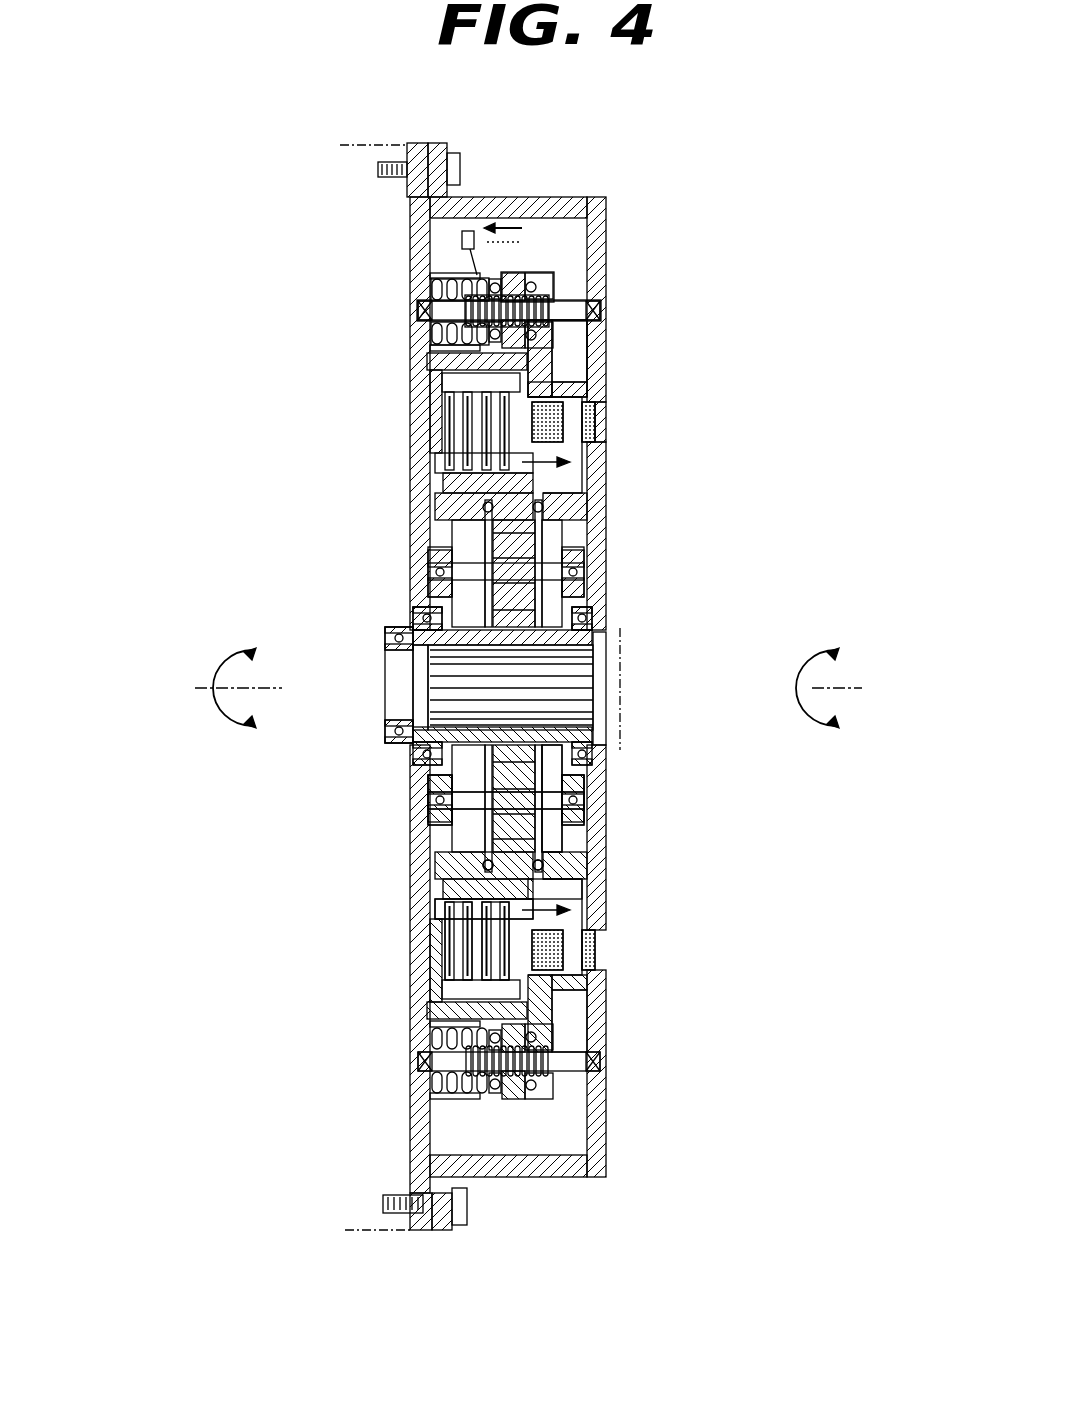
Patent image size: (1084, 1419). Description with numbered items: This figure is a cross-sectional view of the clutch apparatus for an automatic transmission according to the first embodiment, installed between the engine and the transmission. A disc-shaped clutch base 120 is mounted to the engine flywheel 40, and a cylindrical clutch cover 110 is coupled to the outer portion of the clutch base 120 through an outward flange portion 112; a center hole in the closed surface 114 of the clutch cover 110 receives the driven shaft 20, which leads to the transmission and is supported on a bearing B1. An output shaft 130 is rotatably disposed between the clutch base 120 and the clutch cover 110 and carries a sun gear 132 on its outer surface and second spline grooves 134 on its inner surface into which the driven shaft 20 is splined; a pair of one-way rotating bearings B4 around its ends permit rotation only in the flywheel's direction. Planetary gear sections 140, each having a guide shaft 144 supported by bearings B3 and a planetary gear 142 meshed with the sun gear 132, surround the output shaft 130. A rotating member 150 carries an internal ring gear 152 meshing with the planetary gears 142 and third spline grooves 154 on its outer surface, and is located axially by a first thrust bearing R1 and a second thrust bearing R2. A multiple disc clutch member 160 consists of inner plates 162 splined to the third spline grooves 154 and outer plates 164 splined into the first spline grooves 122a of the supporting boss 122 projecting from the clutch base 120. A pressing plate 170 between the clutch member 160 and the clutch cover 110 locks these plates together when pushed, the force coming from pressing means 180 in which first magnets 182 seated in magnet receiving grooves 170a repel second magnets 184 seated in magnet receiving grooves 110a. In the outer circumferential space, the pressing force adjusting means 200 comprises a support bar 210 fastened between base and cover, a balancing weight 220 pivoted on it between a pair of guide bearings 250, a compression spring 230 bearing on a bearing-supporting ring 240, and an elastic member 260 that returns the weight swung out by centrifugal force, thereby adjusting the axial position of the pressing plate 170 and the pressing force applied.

The driven shaft 20 is at (610, 676).
The flywheel 40 is at (378, 1232).
The clutch cover 110 is at (586, 645).
The magnet receiving grooves 110a is at (606, 440).
The outward flange portion 112 is at (455, 150).
The closed surface 114 is at (606, 210).
The clutch base 120 is at (558, 391).
The supporting boss 122 is at (485, 958).
The first spline grooves 122a is at (440, 990).
The output shaft 130 is at (684, 813).
The sun gear 132 is at (606, 843).
The second spline grooves 134 is at (606, 800).
The planetary gear sections 140 is at (520, 820).
The planetary gear 142 is at (437, 782).
The guide shaft 144 is at (480, 805).
The rotating member 150 is at (606, 958).
The internal ring gear 152 is at (606, 898).
The third spline grooves 154 is at (606, 1000).
The multiple disc clutch member 160 is at (362, 945).
The inner plates 162 is at (462, 925).
The outer plates 164 is at (462, 958).
The pressing plate 170 is at (606, 278).
The magnet receiving grooves 170a is at (606, 355).
The pressing means 180 is at (679, 401).
The first magnets 182 is at (606, 392).
The second magnets 184 is at (606, 420).
The pressing force adjusting means 200 is at (407, 728).
The support bar 210 is at (428, 306).
The balancing weight 220 is at (390, 350).
The compression spring 230 is at (478, 290).
The bearing-supporting ring 240 is at (470, 276).
The guide bearings 250 is at (432, 322).
The elastic member 260 is at (480, 265).
The bearing B1 is at (400, 628).
The bearings B3 is at (524, 563).
The one-way rotating bearings B4 is at (422, 608).
The first thrust bearing R1 is at (484, 872).
The second thrust bearing R2 is at (536, 872).